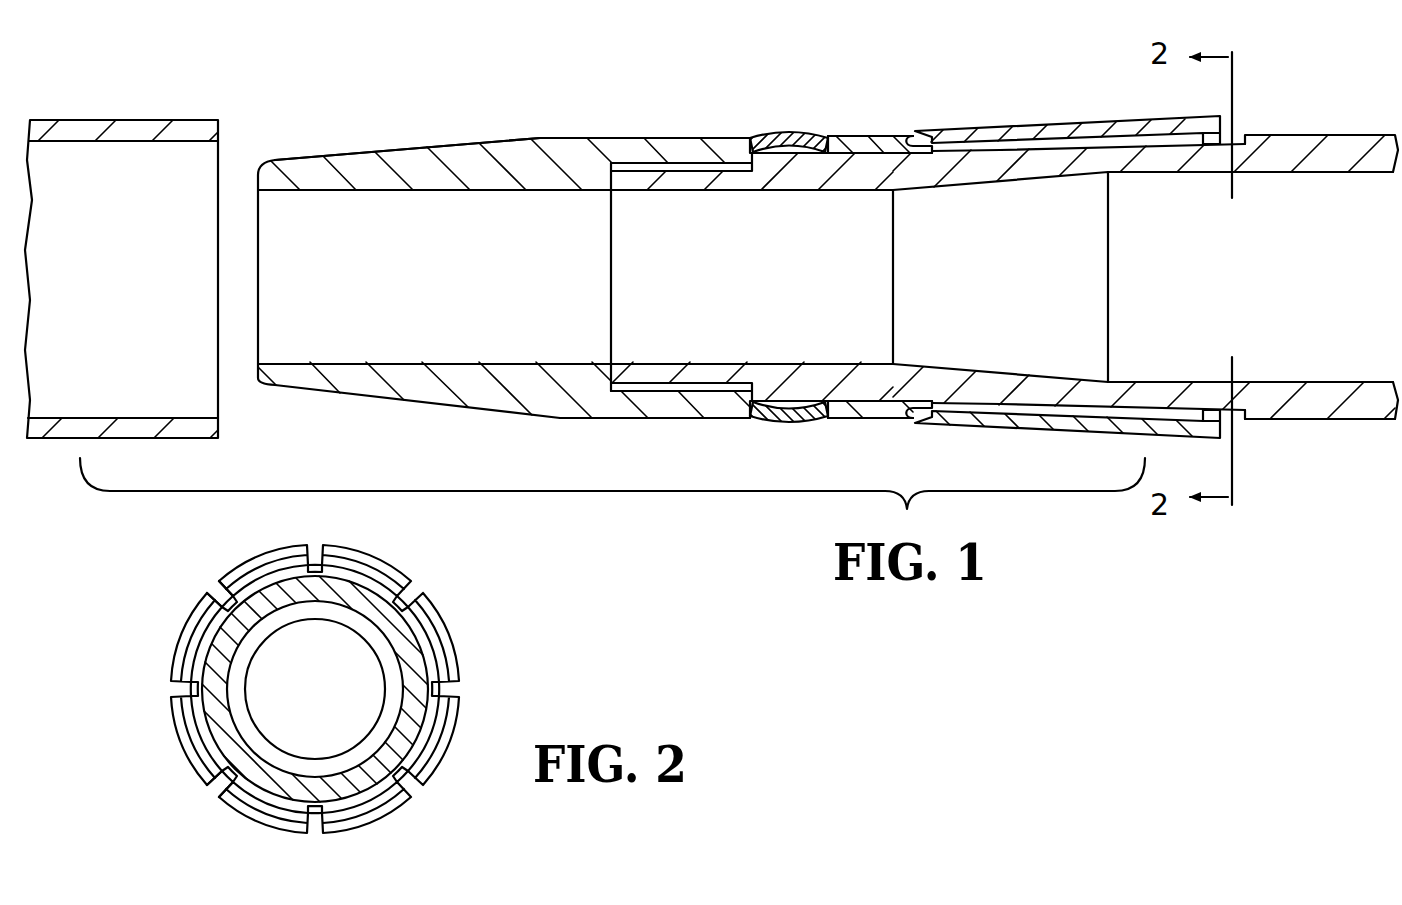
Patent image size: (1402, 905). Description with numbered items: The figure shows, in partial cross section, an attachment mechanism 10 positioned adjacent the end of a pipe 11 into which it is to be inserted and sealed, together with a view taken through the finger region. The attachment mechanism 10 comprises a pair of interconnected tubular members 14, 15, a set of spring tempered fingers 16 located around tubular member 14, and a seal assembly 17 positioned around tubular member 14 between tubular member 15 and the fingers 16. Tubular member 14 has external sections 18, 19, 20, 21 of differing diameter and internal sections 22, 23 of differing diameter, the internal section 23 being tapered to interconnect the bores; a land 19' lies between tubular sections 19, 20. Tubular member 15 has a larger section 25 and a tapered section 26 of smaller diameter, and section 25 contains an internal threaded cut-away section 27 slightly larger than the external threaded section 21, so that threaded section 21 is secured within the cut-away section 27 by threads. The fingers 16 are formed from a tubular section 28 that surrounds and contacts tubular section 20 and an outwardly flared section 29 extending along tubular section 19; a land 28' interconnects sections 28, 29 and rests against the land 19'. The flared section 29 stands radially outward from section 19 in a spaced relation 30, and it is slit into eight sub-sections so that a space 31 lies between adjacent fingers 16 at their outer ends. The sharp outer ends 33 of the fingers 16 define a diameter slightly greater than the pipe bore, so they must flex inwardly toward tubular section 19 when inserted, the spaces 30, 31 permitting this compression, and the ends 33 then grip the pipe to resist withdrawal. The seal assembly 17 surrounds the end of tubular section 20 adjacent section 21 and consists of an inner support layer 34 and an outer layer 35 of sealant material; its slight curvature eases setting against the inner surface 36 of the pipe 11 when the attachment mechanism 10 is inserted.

In FIG. 1, the attachment mechanism 10 is at (828, 82).
In FIG. 1, the pipe 11 is at (140, 118).
In FIG. 1, the tubular member 14 is at (1331, 112).
In FIG. 2, the tubular member 14 is at (380, 612).
In FIG. 1, the tubular member 15 is at (455, 115).
In FIG. 1, the spring tempered fingers 16 is at (1133, 96).
In FIG. 2, the spring tempered fingers 16 is at (178, 665).
In FIG. 1, the seal assembly 17 is at (770, 441).
In FIG. 1, the external diameter section 18 is at (1360, 421).
In FIG. 1, the tubular section 19 is at (1000, 280).
In FIG. 1, the land 19' is at (608, 277).
In FIG. 1, the tubular section 20 is at (862, 384).
In FIG. 1, the external threaded section 21 is at (650, 370).
In FIG. 1, the internal diameter section 22 is at (1262, 392).
In FIG. 1, the internal diameter section 23 is at (937, 375).
In FIG. 1, the section 25 is at (597, 160).
In FIG. 1, the tapered section 26 is at (356, 172).
In FIG. 1, the internal threaded cut-away section 27 is at (675, 176).
In FIG. 1, the tubular section 28 is at (871, 275).
In FIG. 1, the land 28' is at (944, 269).
In FIG. 1, the flared section 29 is at (1082, 124).
In FIG. 1, the spaced relation 30 is at (1177, 158).
In FIG. 2, the spaced relation 30 is at (197, 716).
In FIG. 2, the space 31 is at (218, 592).
In FIG. 1, the outer ends 33 is at (1232, 125).
In FIG. 2, the outer ends 33 is at (208, 760).
In FIG. 1, the inner support layer 34 is at (780, 162).
In FIG. 1, the outer layer of sealant material 35 is at (786, 138).
In FIG. 1, the inner surface of pipe 36 is at (84, 418).